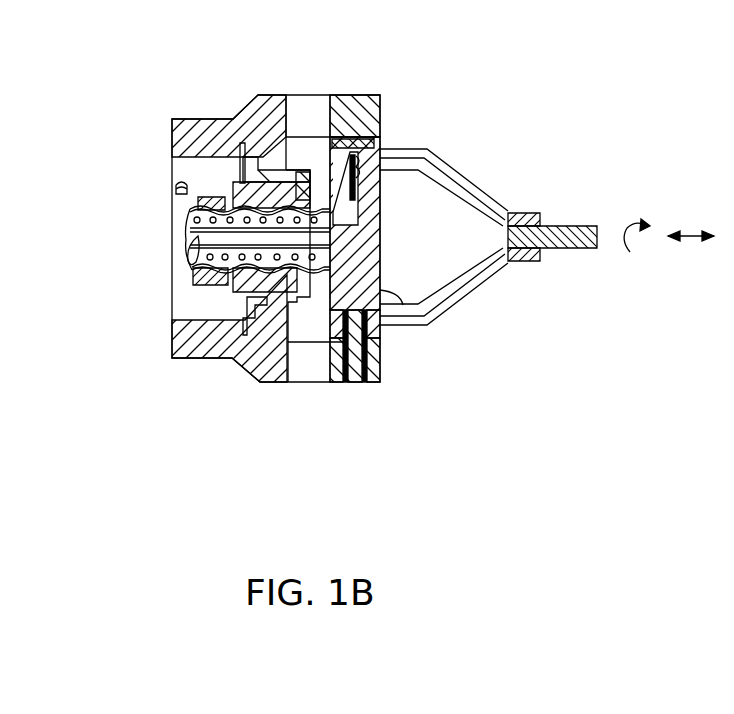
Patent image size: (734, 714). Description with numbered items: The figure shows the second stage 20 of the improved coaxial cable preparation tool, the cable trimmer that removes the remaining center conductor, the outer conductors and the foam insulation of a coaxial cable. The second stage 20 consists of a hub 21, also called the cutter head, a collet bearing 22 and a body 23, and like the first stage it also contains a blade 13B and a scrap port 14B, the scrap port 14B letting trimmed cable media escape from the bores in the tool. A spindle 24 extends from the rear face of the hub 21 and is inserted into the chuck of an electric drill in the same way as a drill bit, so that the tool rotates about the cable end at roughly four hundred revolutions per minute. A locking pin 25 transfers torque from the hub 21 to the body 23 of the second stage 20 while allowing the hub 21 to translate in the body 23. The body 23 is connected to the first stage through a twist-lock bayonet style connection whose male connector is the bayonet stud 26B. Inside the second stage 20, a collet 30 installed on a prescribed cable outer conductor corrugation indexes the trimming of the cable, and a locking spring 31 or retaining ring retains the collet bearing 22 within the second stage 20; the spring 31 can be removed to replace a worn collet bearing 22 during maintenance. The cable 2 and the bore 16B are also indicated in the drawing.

The shaft with rollers 2 is at (184, 243).
The blade 13B is at (355, 183).
The scrap port 14B is at (325, 84).
The insert housing 16B is at (152, 230).
The second stage 20 is at (322, 402).
The hub 21 is at (380, 292).
The collet bearing 22 is at (290, 170).
The body 23 is at (198, 119).
The spindle 24 is at (543, 222).
The locking pin 25 is at (365, 355).
The bayonet stud 26B is at (173, 185).
The collet 30 is at (240, 292).
The locking spring 31 is at (240, 158).